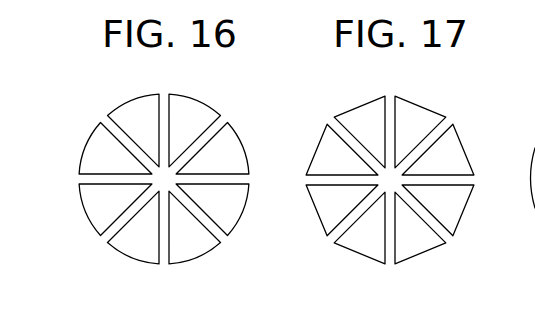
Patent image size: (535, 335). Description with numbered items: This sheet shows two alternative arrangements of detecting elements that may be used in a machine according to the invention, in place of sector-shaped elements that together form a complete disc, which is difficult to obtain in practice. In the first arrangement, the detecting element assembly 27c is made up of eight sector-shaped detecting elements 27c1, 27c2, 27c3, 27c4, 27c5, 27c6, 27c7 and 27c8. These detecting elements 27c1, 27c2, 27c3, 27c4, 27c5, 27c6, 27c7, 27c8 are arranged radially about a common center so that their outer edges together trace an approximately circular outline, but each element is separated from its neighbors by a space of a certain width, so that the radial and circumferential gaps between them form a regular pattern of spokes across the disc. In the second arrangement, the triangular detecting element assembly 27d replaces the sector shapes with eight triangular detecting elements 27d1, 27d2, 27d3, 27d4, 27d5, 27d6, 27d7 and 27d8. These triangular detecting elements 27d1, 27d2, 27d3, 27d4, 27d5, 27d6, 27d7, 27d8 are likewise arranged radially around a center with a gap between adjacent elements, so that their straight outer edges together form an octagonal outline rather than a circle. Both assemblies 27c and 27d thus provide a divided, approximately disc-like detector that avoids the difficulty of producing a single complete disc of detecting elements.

In FIG. 16, the detecting element assembly 27c is at (164, 266).
In FIG. 16, the detecting element 27c1 is at (205, 104).
In FIG. 16, the detecting element 27c2 is at (243, 143).
In FIG. 16, the detecting element 27c3 is at (238, 226).
In FIG. 16, the detecting element 27c4 is at (200, 257).
In FIG. 16, the detecting element 27c5 is at (127, 256).
In FIG. 16, the detecting element 27c6 is at (88, 216).
In FIG. 16, the detecting element 27c7 is at (84, 150).
In FIG. 16, the detecting element 27c8 is at (124, 104).
In FIG. 17, the triangular detecting element assembly 27d is at (397, 266).
In FIG. 17, the triangular detecting element 27d1 is at (433, 112).
In FIG. 17, the triangular detecting element 27d2 is at (461, 138).
In FIG. 17, the triangular detecting element 27d3 is at (464, 208).
In FIG. 17, the triangular detecting element 27d4 is at (432, 249).
In FIG. 17, the triangular detecting element 27d5 is at (355, 252).
In FIG. 17, the triangular detecting element 27d6 is at (316, 210).
In FIG. 17, the triangular detecting element 27d7 is at (317, 146).
In FIG. 17, the triangular detecting element 27d8 is at (356, 108).